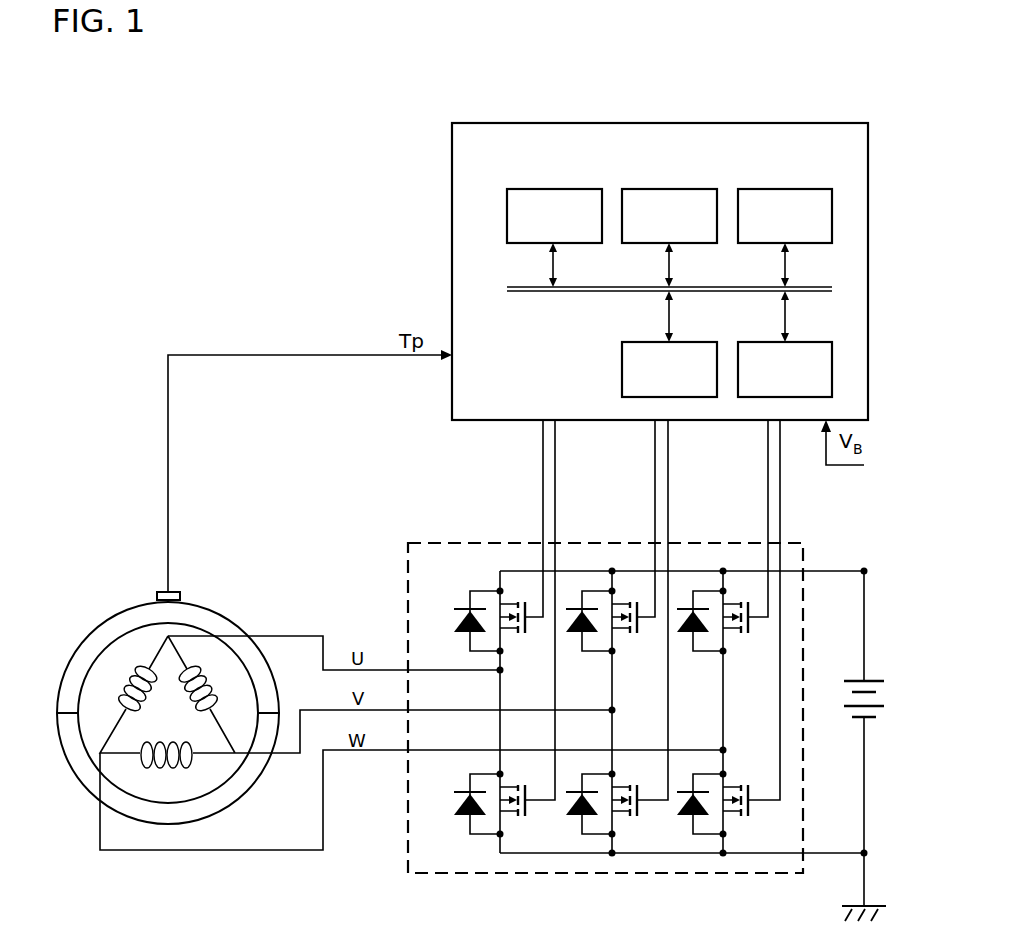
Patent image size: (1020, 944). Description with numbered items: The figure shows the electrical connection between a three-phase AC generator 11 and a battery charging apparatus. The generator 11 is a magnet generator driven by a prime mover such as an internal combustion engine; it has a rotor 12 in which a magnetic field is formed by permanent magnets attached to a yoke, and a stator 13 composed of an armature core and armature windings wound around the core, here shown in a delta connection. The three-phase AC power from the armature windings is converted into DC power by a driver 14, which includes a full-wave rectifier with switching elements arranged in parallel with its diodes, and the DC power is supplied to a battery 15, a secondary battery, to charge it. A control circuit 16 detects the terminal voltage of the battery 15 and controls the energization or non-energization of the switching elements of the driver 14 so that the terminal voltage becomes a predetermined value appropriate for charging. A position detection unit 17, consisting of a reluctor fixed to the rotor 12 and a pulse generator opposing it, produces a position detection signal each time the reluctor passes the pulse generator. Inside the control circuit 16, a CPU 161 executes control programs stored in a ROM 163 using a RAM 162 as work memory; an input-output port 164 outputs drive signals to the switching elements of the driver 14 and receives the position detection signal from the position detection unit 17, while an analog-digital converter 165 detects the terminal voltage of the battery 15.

The three-phase AC generator 11 is at (93, 562).
The rotor 12 is at (82, 651).
The stator 13 is at (158, 715).
The driver 14 is at (440, 543).
The battery 15 is at (848, 681).
The control circuit 16 is at (838, 122).
The position detection unit 17 is at (157, 592).
The CPU 161 is at (572, 188).
The RAM 162 is at (691, 188).
The ROM 163 is at (806, 188).
The input-output port 164 is at (691, 341).
The analog-digital converter 165 is at (806, 341).